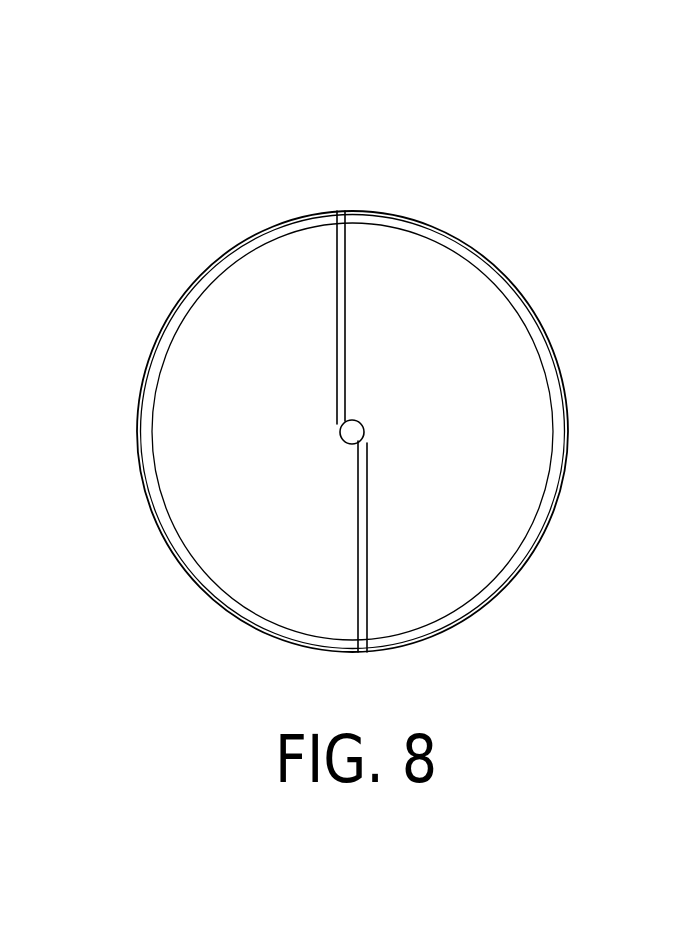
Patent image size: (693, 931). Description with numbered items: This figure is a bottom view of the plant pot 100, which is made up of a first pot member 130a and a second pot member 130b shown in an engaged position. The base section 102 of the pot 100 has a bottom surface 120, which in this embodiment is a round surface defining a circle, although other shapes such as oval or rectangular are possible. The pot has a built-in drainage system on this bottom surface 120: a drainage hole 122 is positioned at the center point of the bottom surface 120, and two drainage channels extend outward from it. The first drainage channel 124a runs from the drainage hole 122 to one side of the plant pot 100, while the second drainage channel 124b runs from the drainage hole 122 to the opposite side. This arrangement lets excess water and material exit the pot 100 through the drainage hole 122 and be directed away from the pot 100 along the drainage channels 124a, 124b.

The plant pot 100 is at (352, 342).
The base section 102 is at (513, 283).
The bottom surface 120 is at (468, 545).
The drainage hole 122 is at (350, 432).
The first drainage channel 124a is at (337, 273).
The second drainage channel 124b is at (358, 592).
The first pot member 130a is at (175, 487).
The second pot member 130b is at (537, 437).